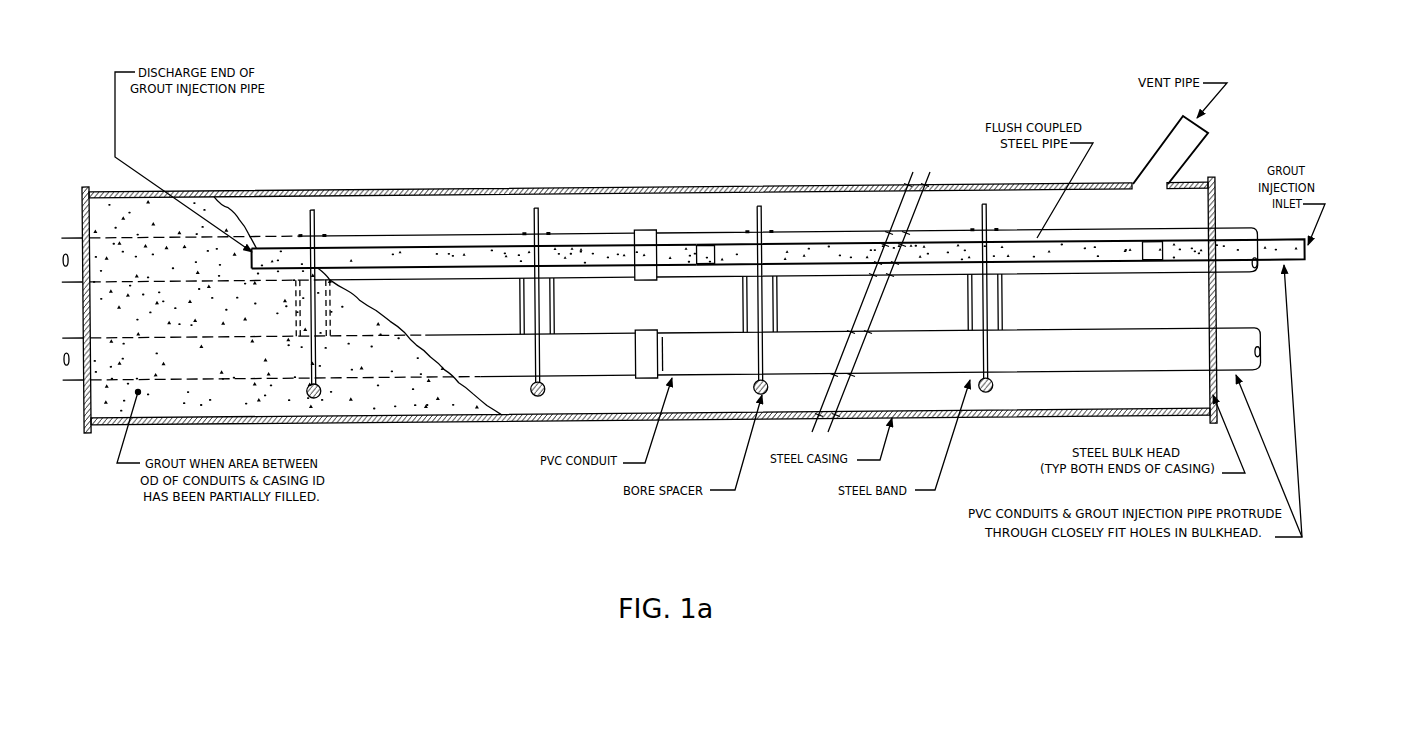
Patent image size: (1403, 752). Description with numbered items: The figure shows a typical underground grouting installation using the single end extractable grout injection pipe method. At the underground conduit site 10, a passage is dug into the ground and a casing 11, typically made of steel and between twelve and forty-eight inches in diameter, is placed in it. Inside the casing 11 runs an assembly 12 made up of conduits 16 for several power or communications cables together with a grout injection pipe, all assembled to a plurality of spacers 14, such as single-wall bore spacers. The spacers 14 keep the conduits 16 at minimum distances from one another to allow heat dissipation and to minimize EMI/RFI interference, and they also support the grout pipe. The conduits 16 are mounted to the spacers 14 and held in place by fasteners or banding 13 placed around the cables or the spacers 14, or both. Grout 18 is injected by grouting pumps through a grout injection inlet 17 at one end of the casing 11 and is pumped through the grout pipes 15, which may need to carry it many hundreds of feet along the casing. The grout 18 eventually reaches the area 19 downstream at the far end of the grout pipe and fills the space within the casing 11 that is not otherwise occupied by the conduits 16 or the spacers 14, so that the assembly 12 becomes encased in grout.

The underground conduit site 10 is at (722, 260).
The casing 11 is at (883, 185).
The assembly 12 is at (1157, 295).
The banding 13 is at (968, 285).
The spacers 14 is at (978, 210).
The grout pipes 15 is at (833, 236).
The conduits 16 is at (1080, 374).
The grout injection inlet 17 is at (1306, 254).
The grout 18 is at (463, 258).
The area 19 is at (370, 327).